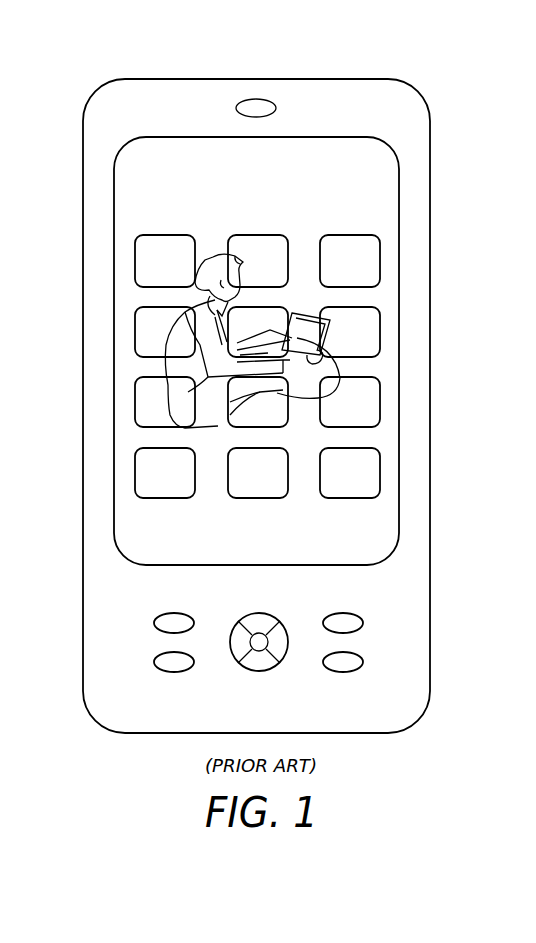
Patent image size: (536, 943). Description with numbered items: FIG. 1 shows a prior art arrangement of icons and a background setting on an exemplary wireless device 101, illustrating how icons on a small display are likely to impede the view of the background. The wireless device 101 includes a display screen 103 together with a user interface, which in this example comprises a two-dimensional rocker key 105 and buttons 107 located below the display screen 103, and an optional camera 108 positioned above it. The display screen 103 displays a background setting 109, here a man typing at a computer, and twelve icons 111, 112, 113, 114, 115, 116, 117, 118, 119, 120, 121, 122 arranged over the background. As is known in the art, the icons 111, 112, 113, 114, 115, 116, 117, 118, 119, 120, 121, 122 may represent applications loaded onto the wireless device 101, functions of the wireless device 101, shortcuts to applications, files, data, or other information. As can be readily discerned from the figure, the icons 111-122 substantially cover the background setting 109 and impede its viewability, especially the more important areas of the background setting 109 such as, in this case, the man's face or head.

The wireless device 101 is at (433, 192).
The display screen 103 is at (114, 203).
The two-dimensional rocker key 105 is at (259, 671).
The buttons 107 is at (174, 672).
The camera 108 is at (257, 99).
The background setting 109 is at (213, 240).
The icon 111 is at (135, 261).
The icon 112 is at (135, 332).
The icon 113 is at (135, 402).
The icon 114 is at (135, 472).
The icon 115 is at (269, 235).
The icon 116 is at (274, 306).
The icon 117 is at (287, 410).
The icon 118 is at (258, 498).
The icon 119 is at (380, 261).
The icon 120 is at (380, 331).
The icon 121 is at (380, 401).
The icon 122 is at (380, 471).